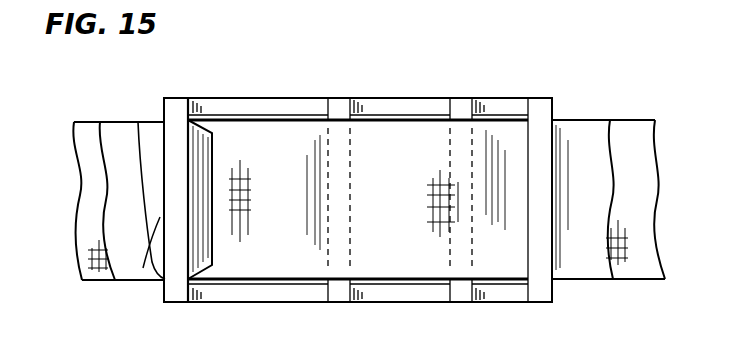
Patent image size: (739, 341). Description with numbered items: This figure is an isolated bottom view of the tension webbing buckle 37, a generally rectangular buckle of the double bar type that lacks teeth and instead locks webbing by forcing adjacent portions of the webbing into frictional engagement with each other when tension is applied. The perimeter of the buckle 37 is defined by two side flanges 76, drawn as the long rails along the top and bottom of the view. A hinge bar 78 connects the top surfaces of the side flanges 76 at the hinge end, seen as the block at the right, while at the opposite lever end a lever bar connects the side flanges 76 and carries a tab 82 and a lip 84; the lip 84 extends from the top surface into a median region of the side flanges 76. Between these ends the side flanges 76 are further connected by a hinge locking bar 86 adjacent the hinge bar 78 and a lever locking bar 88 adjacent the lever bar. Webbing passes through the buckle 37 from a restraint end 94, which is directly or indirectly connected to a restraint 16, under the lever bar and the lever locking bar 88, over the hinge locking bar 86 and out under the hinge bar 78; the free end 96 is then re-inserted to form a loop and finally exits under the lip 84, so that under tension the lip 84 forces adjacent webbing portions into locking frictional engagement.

The tension webbing buckle 37 is at (196, 90).
The side flanges 76 is at (382, 98).
The hinge bar 78 is at (540, 146).
The tab 82 is at (157, 280).
The lip 84 is at (213, 157).
The hinge locking bar 86 is at (463, 160).
The lever locking bar 88 is at (333, 247).
The restraint end 94 is at (91, 136).
The free end 96 is at (136, 143).
The restraint 16 is at (40, 183).